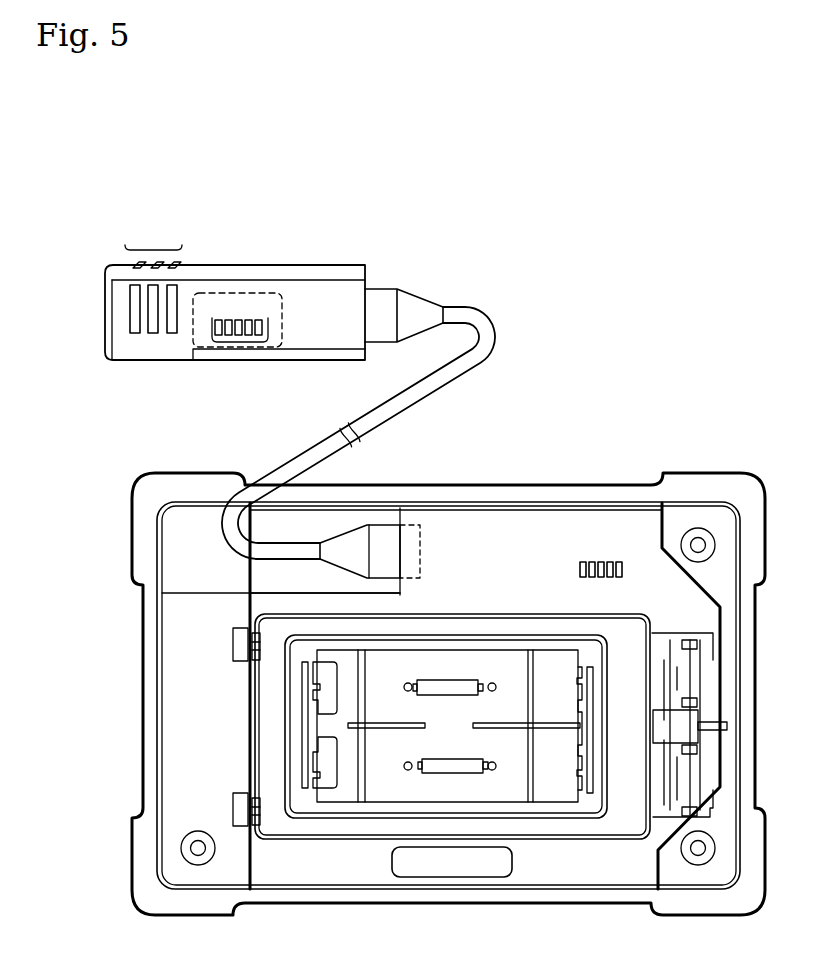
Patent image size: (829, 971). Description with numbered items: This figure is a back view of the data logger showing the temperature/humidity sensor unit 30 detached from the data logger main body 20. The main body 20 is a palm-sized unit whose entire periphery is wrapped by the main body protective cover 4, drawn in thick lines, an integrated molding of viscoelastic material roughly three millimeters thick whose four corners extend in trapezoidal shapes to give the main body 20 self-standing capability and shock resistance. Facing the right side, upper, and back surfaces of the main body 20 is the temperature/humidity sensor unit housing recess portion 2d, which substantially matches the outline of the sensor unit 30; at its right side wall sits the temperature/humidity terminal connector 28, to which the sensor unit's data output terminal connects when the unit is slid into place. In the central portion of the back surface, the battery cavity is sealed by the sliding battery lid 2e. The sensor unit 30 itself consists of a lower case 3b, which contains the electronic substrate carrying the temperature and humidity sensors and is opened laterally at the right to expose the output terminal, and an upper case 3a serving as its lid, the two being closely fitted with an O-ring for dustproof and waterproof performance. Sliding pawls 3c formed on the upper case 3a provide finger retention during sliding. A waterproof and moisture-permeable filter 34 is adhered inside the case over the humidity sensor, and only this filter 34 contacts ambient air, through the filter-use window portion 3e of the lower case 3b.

The main body protective cover 4 is at (131, 851).
The data logger main body 20 is at (543, 532).
The sliding battery lid 2e is at (513, 620).
The temperature/humidity sensor unit housing recess portion 2d is at (276, 580).
The temperature/humidity terminal connector 28 is at (420, 552).
The temperature/humidity sensor unit 30 is at (345, 262).
The upper case 3a is at (122, 277).
The lower case 3b is at (120, 323).
The sliding pawls 3c is at (153, 245).
The waterproof and moisture-permeable filter 34 is at (243, 293).
The filter-use window portion 3e is at (240, 343).